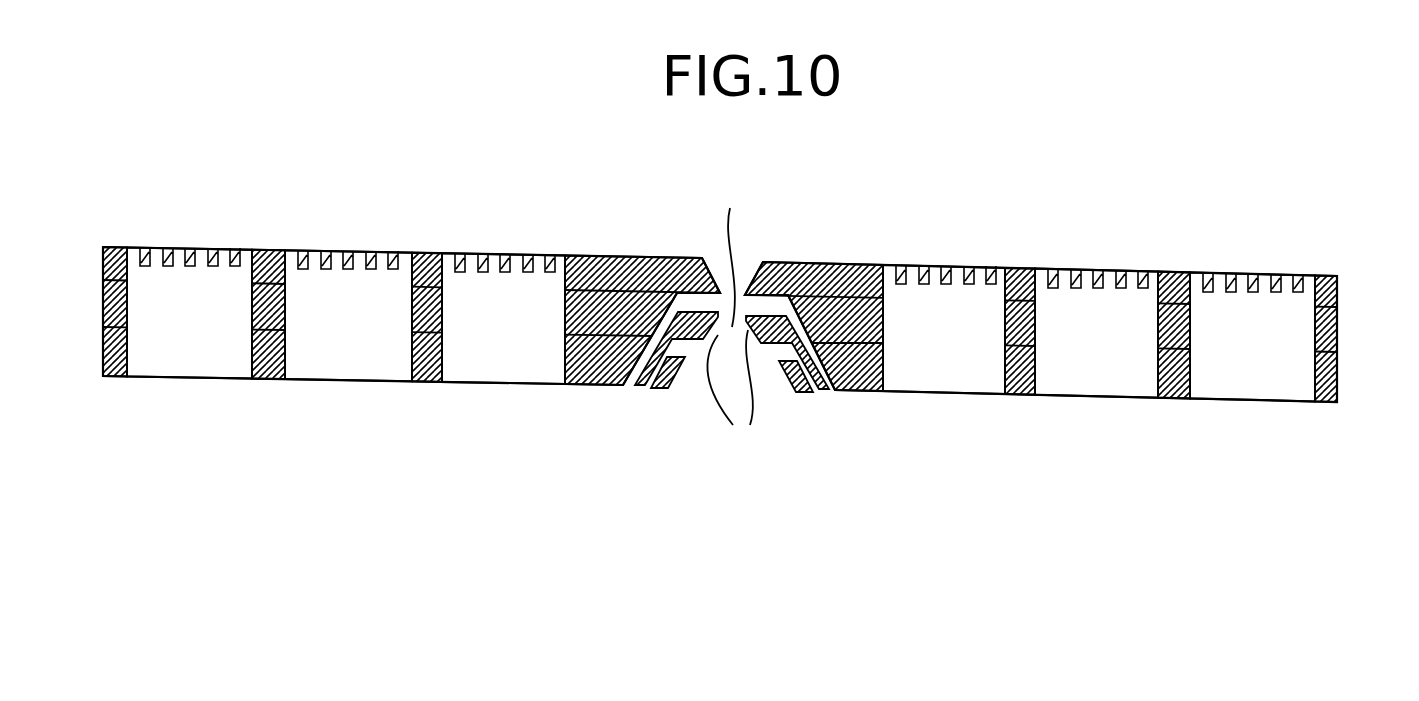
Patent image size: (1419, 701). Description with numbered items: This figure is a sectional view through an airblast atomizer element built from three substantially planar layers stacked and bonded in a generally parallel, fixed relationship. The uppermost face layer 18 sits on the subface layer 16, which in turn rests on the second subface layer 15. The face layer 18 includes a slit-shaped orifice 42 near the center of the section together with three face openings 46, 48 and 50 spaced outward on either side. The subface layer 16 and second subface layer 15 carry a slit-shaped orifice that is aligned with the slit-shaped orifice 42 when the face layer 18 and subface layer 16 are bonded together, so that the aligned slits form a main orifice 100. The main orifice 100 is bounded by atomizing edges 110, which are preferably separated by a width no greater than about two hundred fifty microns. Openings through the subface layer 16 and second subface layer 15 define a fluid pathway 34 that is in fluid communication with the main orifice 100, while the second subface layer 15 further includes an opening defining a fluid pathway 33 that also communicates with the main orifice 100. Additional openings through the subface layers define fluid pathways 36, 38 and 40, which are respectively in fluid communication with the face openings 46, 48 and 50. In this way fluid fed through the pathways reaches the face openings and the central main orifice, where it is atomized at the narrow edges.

The second subface layer 15 is at (1340, 385).
The subface layer 16 is at (1340, 333).
The face layer 18 is at (1340, 297).
The fluid pathway 33 is at (650, 388).
The fluid pathway 34 is at (628, 388).
The fluid pathway 36 is at (488, 372).
The fluid pathway 38 is at (350, 365).
The fluid pathway 40 is at (202, 365).
The slit-shaped orifice 42 is at (748, 293).
The face opening 46 is at (560, 254).
The face opening 48 is at (407, 250).
The face opening 50 is at (247, 247).
The main orifice 100 is at (733, 251).
The atomizing edges 110 is at (734, 394).